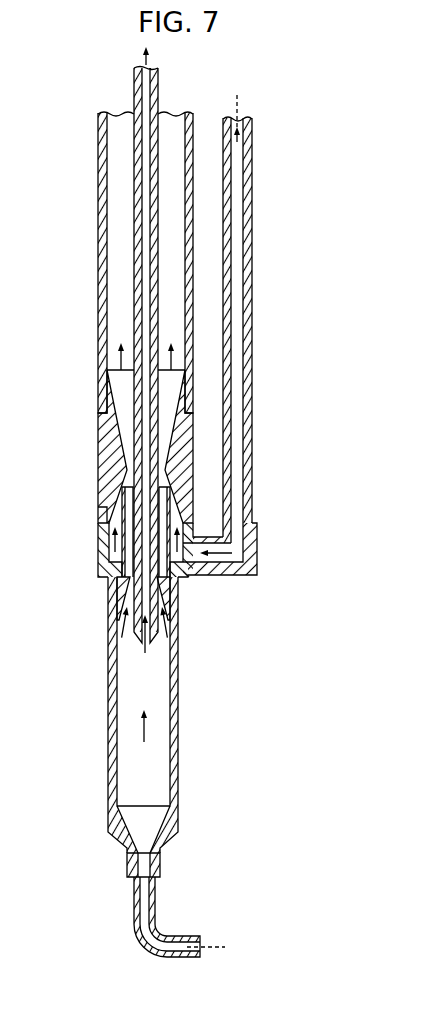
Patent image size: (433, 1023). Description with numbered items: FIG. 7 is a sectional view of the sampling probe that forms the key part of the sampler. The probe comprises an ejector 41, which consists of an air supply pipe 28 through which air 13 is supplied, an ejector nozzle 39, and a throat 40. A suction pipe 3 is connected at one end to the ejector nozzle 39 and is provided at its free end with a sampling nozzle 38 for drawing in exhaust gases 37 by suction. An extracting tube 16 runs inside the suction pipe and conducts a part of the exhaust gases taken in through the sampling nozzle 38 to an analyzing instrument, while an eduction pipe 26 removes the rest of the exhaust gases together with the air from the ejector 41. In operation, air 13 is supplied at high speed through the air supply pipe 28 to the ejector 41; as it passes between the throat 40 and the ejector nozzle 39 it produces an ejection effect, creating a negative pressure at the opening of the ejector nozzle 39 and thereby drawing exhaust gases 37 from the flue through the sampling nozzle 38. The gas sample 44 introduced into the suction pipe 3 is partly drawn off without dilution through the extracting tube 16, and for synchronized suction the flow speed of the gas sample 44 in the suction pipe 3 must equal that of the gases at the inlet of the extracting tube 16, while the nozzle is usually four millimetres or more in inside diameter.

The suction pipe 3 is at (108, 760).
The air 13 is at (237, 108).
The extracting tube 16 is at (133, 392).
The eduction pipe 26 is at (98, 192).
The air supply pipe 28 is at (253, 387).
The exhaust gases 37 is at (210, 947).
The sampling nozzle 38 is at (180, 936).
The ejector nozzle 39 is at (120, 508).
The throat 40 is at (112, 450).
The ejector 41 is at (98, 553).
The gas sample 44 is at (146, 728).